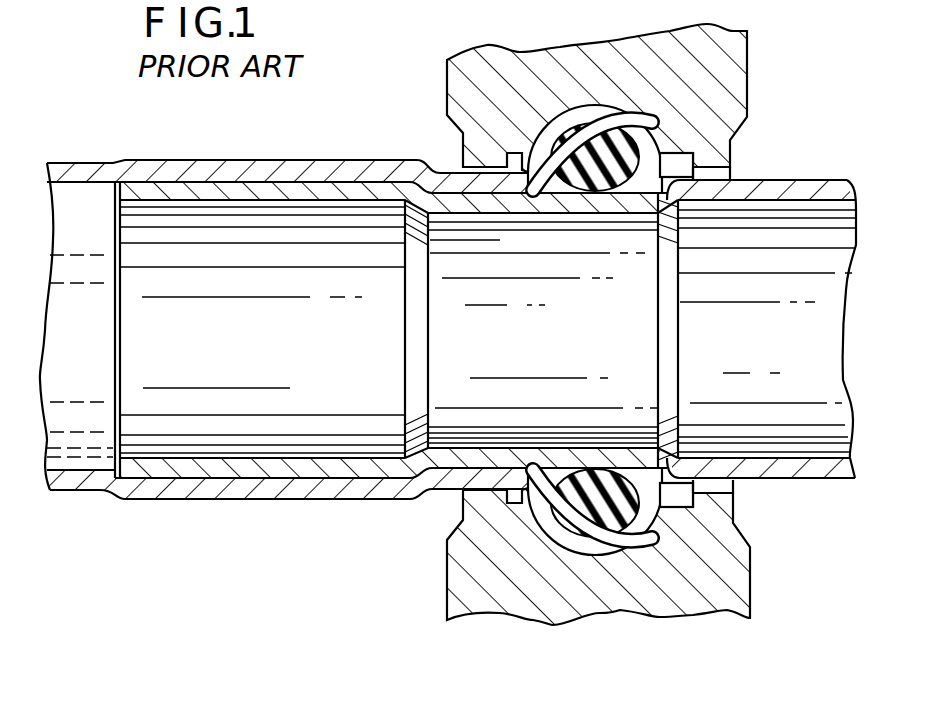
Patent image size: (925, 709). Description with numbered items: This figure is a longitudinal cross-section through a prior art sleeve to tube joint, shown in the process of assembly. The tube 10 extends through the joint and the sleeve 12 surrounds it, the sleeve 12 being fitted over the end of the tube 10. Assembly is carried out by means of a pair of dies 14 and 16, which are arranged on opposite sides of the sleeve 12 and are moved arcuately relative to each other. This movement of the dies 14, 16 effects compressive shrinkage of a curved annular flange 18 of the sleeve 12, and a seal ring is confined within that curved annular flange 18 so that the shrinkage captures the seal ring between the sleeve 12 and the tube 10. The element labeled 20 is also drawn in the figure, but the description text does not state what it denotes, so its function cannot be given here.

The tube 10 is at (824, 180).
The sleeve 12 is at (246, 160).
The die 14 is at (737, 67).
The die 16 is at (742, 582).
The curved annular flange 18 is at (647, 122).
The O-ring seal 20 is at (578, 150).